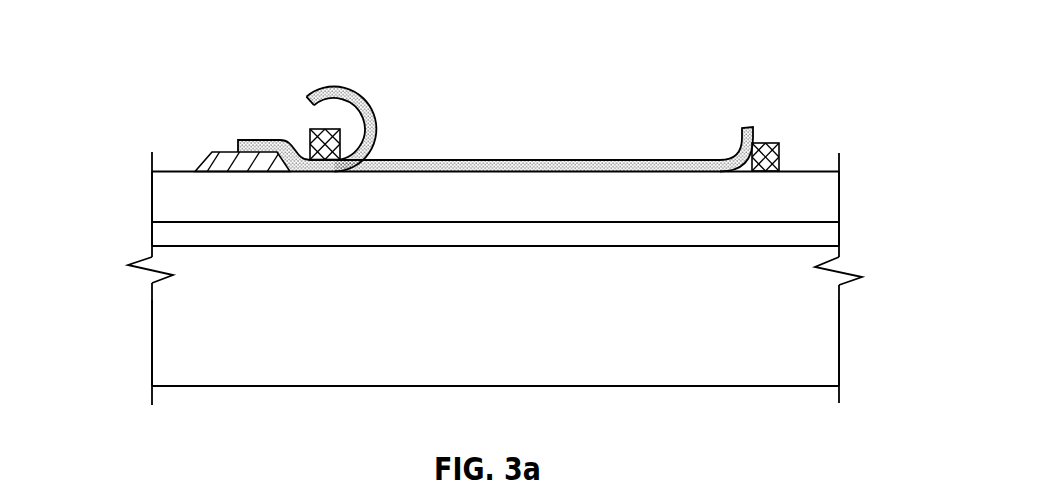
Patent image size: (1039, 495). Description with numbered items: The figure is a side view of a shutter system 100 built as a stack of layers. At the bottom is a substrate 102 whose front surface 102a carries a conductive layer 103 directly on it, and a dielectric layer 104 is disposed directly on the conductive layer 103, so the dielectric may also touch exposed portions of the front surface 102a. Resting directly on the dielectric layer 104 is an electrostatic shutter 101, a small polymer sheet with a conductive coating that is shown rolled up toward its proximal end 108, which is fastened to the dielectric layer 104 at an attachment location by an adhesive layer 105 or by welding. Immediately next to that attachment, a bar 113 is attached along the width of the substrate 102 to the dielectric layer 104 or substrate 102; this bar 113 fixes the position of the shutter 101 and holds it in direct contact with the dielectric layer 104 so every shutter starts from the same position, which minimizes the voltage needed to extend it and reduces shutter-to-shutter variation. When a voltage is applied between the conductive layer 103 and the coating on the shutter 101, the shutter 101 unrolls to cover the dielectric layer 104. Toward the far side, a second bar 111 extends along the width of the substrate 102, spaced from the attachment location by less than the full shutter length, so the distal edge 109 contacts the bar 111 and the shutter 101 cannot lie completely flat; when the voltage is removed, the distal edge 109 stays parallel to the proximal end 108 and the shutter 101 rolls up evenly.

The shutter system 100 is at (117, 167).
The electrostatic shutter 101 is at (330, 87).
The substrate 102 is at (819, 339).
The front surface 102a is at (226, 243).
The conductive layer 103 is at (825, 237).
The dielectric layer 104 is at (822, 197).
The adhesive layer 105 is at (204, 164).
The proximal end 108 is at (306, 150).
The distal edge 109 is at (747, 128).
The bar 111 is at (780, 165).
The bar 113 is at (310, 137).